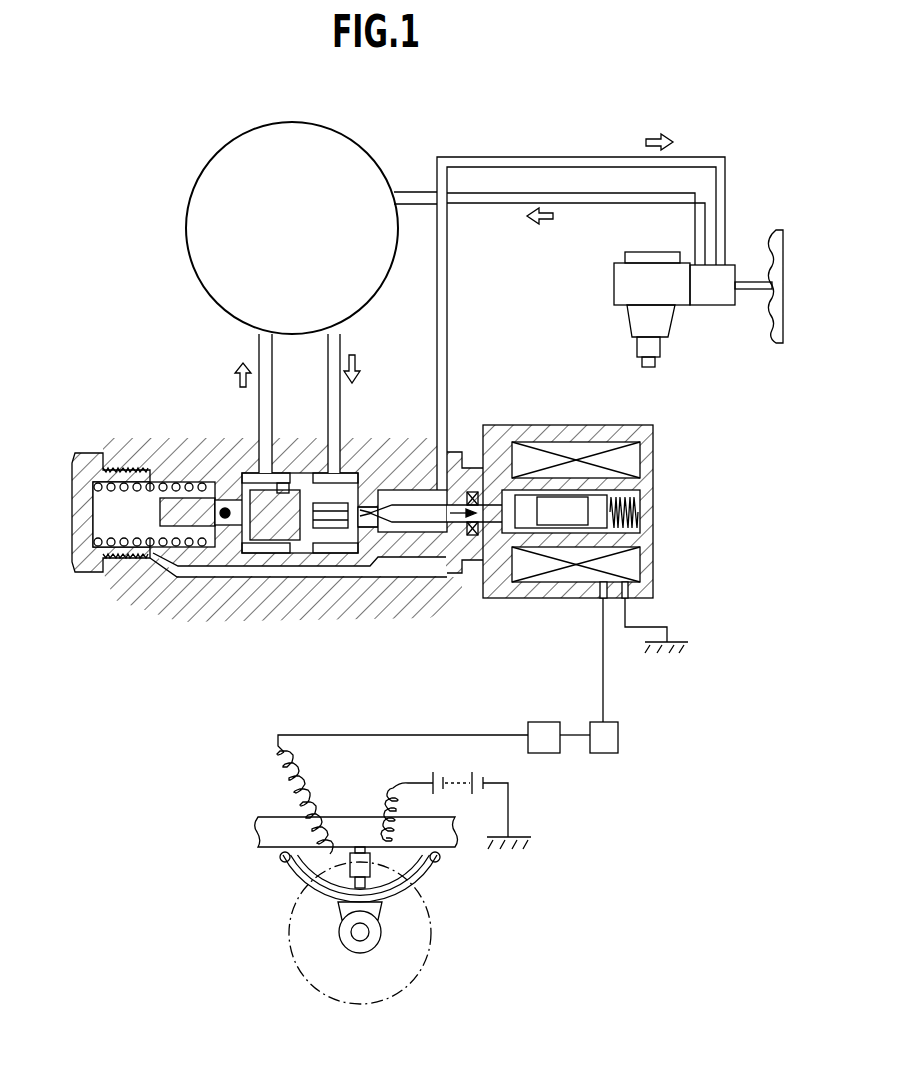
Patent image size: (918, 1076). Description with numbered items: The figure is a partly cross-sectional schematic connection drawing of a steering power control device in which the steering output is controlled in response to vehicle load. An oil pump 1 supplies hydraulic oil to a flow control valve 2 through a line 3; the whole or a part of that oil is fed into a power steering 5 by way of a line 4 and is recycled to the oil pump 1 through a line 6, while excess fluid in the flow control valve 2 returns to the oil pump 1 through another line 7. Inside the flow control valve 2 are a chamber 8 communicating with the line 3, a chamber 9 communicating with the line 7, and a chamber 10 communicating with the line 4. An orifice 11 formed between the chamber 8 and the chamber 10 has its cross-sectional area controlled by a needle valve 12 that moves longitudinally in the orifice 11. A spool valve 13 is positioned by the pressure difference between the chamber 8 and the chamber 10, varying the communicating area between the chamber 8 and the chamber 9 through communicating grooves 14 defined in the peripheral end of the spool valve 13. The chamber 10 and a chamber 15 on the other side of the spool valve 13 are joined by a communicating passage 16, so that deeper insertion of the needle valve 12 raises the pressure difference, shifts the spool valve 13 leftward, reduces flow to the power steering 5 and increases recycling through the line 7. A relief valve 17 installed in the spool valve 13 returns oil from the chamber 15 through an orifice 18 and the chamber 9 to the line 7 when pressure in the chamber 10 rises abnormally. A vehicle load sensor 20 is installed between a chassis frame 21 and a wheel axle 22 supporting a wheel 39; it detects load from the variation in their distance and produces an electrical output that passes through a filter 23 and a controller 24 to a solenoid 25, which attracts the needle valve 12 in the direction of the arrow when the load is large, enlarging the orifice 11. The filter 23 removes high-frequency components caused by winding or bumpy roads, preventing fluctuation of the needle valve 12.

The oil pump 1 is at (350, 135).
The flow control valve 2 is at (190, 596).
The line 3 is at (328, 376).
The line 4 is at (447, 380).
The power steering 5 is at (672, 312).
The line 6 is at (500, 205).
The line 7 is at (259, 433).
The chamber 8 is at (355, 473).
The chamber 9 is at (290, 483).
The chamber 10 is at (420, 518).
The orifice 11 is at (370, 507).
The needle valve 12 is at (387, 535).
The spool valve 13 is at (255, 556).
The communicating grooves 14 is at (330, 535).
The chamber 15 is at (98, 516).
The communicating passage 16 is at (233, 575).
The relief valve 17 is at (207, 485).
The orifice 18 is at (288, 473).
The vehicle load sensor 20 is at (372, 868).
The chassis frame 21 is at (275, 825).
The wheel axle 22 is at (360, 935).
The filter 23 is at (548, 748).
The controller 24 is at (612, 742).
The solenoid 25 is at (580, 575).
The wheel 39 is at (418, 965).